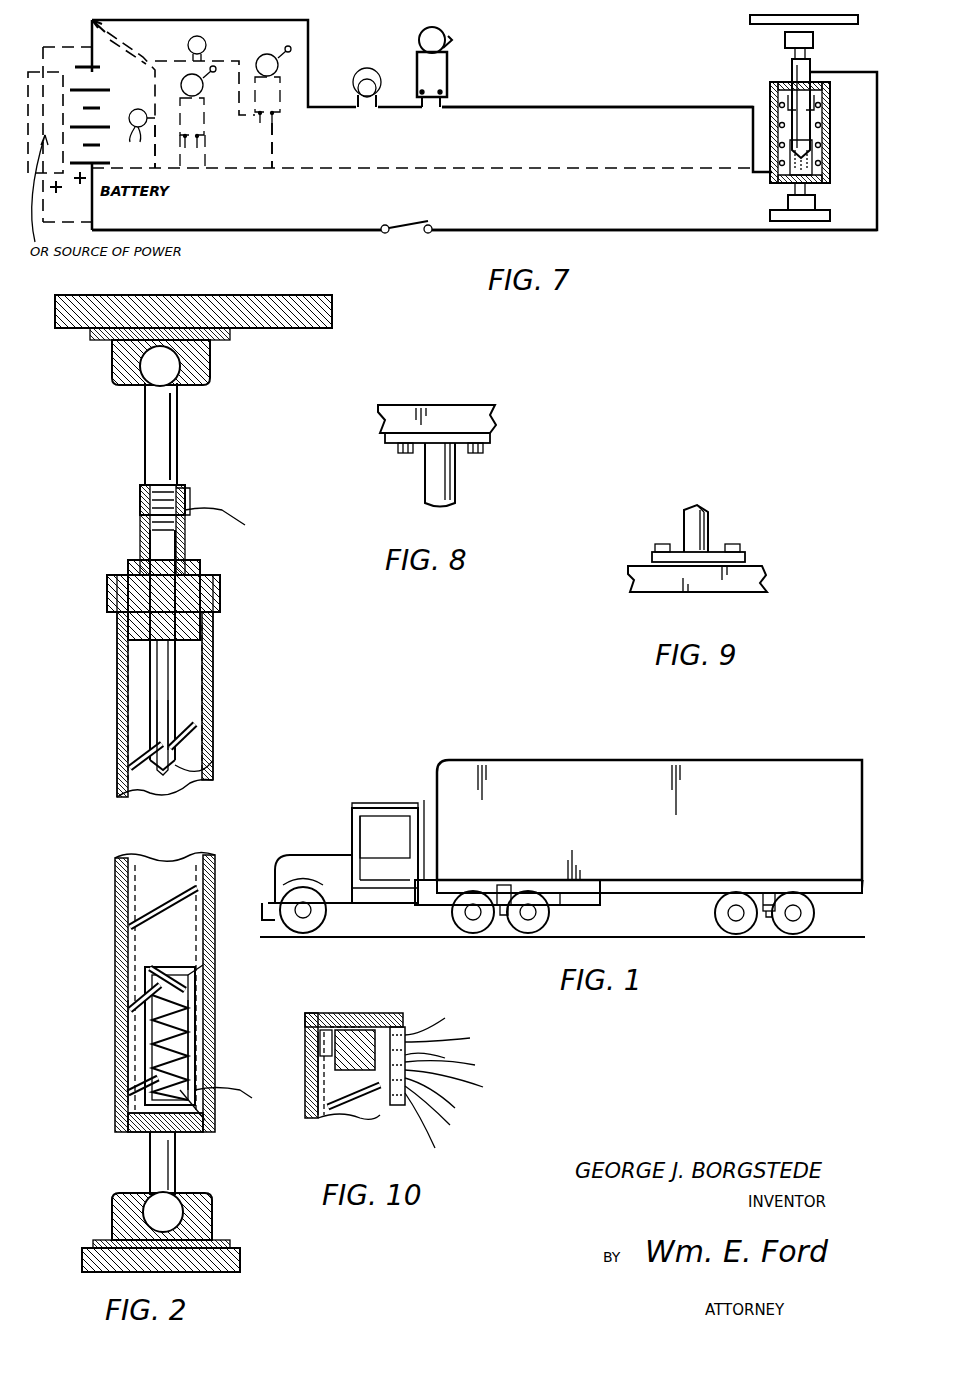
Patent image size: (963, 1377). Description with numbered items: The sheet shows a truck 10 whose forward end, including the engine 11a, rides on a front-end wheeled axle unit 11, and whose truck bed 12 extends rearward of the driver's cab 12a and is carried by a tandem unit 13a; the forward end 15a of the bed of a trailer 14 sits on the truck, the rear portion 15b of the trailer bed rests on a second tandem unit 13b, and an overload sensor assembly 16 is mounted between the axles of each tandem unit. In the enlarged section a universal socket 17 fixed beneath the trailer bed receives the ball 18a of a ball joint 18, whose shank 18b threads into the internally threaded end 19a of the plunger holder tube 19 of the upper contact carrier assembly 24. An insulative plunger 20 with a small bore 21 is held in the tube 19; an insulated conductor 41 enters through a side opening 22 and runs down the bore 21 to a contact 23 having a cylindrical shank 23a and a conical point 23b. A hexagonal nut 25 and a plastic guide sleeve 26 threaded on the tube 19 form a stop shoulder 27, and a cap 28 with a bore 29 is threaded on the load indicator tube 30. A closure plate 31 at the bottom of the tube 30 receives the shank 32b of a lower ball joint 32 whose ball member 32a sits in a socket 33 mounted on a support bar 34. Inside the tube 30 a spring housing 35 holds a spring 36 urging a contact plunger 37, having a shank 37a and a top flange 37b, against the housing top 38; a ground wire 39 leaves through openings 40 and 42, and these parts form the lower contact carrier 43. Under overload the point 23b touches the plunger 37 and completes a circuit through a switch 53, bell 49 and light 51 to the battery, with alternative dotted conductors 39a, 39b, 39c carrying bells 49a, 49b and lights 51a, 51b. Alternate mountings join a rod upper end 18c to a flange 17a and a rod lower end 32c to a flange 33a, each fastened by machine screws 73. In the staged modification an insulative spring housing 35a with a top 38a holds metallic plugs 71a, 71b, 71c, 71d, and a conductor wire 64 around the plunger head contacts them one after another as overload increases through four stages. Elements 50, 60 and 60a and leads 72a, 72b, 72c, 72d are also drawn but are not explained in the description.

In FIG. 1, the truck 10 is at (314, 833).
In FIG. 1, the front-end wheeled axle unit 11 is at (303, 922).
In FIG. 1, the engine 11a is at (268, 872).
In FIG. 1, the truck bed 12 is at (424, 830).
In FIG. 1, the driver's cab 12a is at (388, 810).
In FIG. 1, the tandem unit 13a is at (449, 929).
In FIG. 1, the second tandem unit 13b is at (818, 908).
In FIG. 1, the trailer 14 is at (555, 768).
In FIG. 2, the trailer bed forward end 15a is at (178, 270).
In FIG. 8, the trailer bed forward end 15a is at (490, 382).
In FIG. 1, the trailer bed forward end 15a is at (458, 880).
In FIG. 2, the trailer bed rear portion 15b is at (193, 293).
In FIG. 8, the trailer bed rear portion 15b is at (436, 385).
In FIG. 1, the trailer bed rear portion 15b is at (768, 882).
In FIG. 7, the overload sensor assembly 16 is at (762, 189).
In FIG. 2, the overload sensor assembly 16 is at (252, 669).
In FIG. 1, the overload sensor assembly 16 is at (517, 878).
In FIG. 2, the universal socket 17 is at (112, 355).
In FIG. 8, the flange 17a is at (392, 443).
In FIG. 2, the ball joint 18 is at (131, 429).
In FIG. 2, the ball 18a is at (150, 372).
In FIG. 2, the shank 18b is at (145, 458).
In FIG. 8, the rod upper end 18c is at (432, 475).
In FIG. 2, the plunger holder tube 19 is at (129, 538).
In FIG. 2, the internally threaded upper end 19a is at (140, 500).
In FIG. 2, the insulative plunger 20 is at (160, 710).
In FIG. 2, the small bore 21 is at (158, 695).
In FIG. 2, the side opening 22 is at (186, 500).
In FIG. 7, the electrical contact 23 is at (812, 122).
In FIG. 2, the electrical contact 23 is at (144, 775).
In FIG. 2, the cylindrical shank 23a is at (185, 752).
In FIG. 2, the conical point 23b is at (205, 770).
In FIG. 2, the upper contact carrier assembly 24 is at (110, 567).
In FIG. 2, the hexagonal nut 25 is at (200, 575).
In FIG. 2, the plastic guide sleeve 26 is at (117, 628).
In FIG. 2, the upper carrier stop shoulder 27 is at (213, 625).
In FIG. 2, the cap 28 is at (107, 592).
In FIG. 2, the cap bore 29 is at (220, 582).
In FIG. 2, the load indicator tube 30 is at (105, 900).
In FIG. 2, the closure plate 31 is at (130, 1130).
In FIG. 2, the lower ball joint 32 is at (190, 1162).
In FIG. 2, the ball member 32a is at (175, 1200).
In FIG. 2, the shank 32b is at (160, 1160).
In FIG. 9, the rod lower end 32c is at (710, 535).
In FIG. 2, the socket 33 is at (101, 1220).
In FIG. 9, the flange 33a is at (745, 557).
In FIG. 2, the support bar 34 is at (100, 1265).
In FIG. 9, the support bar 34 is at (767, 592).
In FIG. 2, the spring housing 35 is at (150, 1052).
In FIG. 10, the insulative spring housing 35a is at (318, 1088).
In FIG. 2, the spring 36 is at (135, 1022).
In FIG. 10, the spring 36 is at (338, 1115).
In FIG. 7, the contact plunger 37 is at (808, 142).
In FIG. 2, the contact plunger 37 is at (168, 968).
In FIG. 2, the plunger shank 37a is at (196, 975).
In FIG. 10, the plunger shank 37a is at (350, 1027).
In FIG. 2, the top flange 37b is at (140, 995).
In FIG. 2, the housing top 38 is at (140, 948).
In FIG. 10, the housing top 38a is at (320, 1013).
In FIG. 7, the ground wire 39 is at (575, 105).
In FIG. 2, the ground wire 39 is at (245, 1088).
In FIG. 7, the conductor 39a is at (564, 165).
In FIG. 7, the parallel line 39b is at (272, 150).
In FIG. 7, the parallel line 39c is at (170, 146).
In FIG. 2, the opening 40 is at (198, 1050).
In FIG. 7, the insulated conductor 41 is at (605, 230).
In FIG. 2, the insulated conductor 41 is at (238, 514).
In FIG. 2, the opening 42 is at (212, 1108).
In FIG. 2, the lower contact carrier 43 is at (205, 1005).
In FIG. 7, the bell 49 is at (445, 97).
In FIG. 7, the bell 49a is at (280, 95).
In FIG. 7, the bell 49b is at (205, 105).
In FIG. 2, the pin 50 is at (200, 725).
In FIG. 7, the indicating light 51 is at (356, 74).
In FIG. 7, the light 51a is at (206, 42).
In FIG. 7, the light 51b is at (137, 136).
In FIG. 7, the switch 53 is at (408, 224).
In FIG. 2, the pin 60 is at (165, 968).
In FIG. 10, the block 60a is at (372, 1027).
In FIG. 10, the conductor wire 64 is at (318, 1035).
In FIG. 10, the metallic plug 71a is at (424, 1053).
In FIG. 10, the metallic plug 71b is at (432, 1055).
In FIG. 10, the metallic plug 71c is at (443, 1098).
In FIG. 10, the metallic plug 71d is at (445, 1111).
In FIG. 10, the lead 72a is at (437, 1030).
In FIG. 10, the lead 72b is at (454, 1054).
In FIG. 10, the lead 72c is at (457, 1081).
In FIG. 10, the lead 72d is at (435, 1126).
In FIG. 8, the machine screws 73 is at (477, 455).
In FIG. 9, the machine screws 73 is at (662, 543).